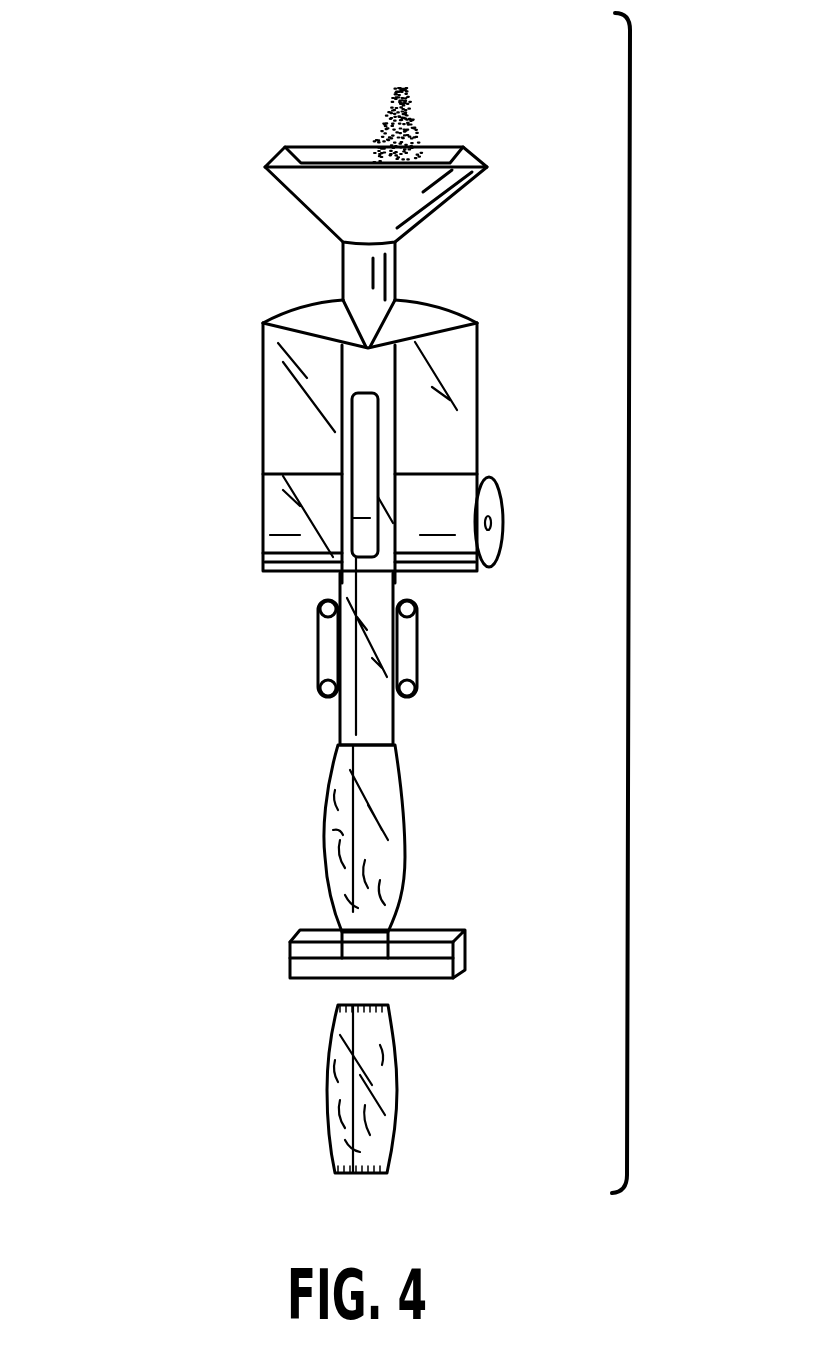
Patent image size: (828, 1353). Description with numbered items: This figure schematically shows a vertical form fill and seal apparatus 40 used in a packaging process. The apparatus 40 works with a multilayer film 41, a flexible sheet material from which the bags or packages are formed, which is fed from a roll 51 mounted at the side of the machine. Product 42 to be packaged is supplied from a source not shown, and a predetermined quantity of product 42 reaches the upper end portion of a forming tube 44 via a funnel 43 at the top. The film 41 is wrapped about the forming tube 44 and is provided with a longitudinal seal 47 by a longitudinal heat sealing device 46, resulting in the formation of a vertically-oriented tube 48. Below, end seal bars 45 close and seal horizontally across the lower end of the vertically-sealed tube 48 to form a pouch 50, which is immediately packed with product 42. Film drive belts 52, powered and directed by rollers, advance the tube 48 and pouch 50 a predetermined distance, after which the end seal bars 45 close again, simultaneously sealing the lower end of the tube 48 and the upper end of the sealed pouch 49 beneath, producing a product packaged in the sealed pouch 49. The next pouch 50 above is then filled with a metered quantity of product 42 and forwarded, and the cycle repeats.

The vertical form fill and seal apparatus 40 is at (200, 374).
The multilayer film 41 is at (467, 373).
The product 42 is at (428, 110).
The funnel 43 is at (423, 198).
The forming tube 44 is at (383, 277).
The end seal bars 45 is at (422, 940).
The longitudinal heat sealing device 46 is at (370, 455).
The longitudinal seal 47 is at (397, 582).
The vertically-oriented tube 48 is at (340, 583).
The sealed pouch 49 is at (387, 1065).
The pouch 50 is at (388, 867).
The roll 51 is at (493, 495).
The film drive belts 52 is at (318, 648).